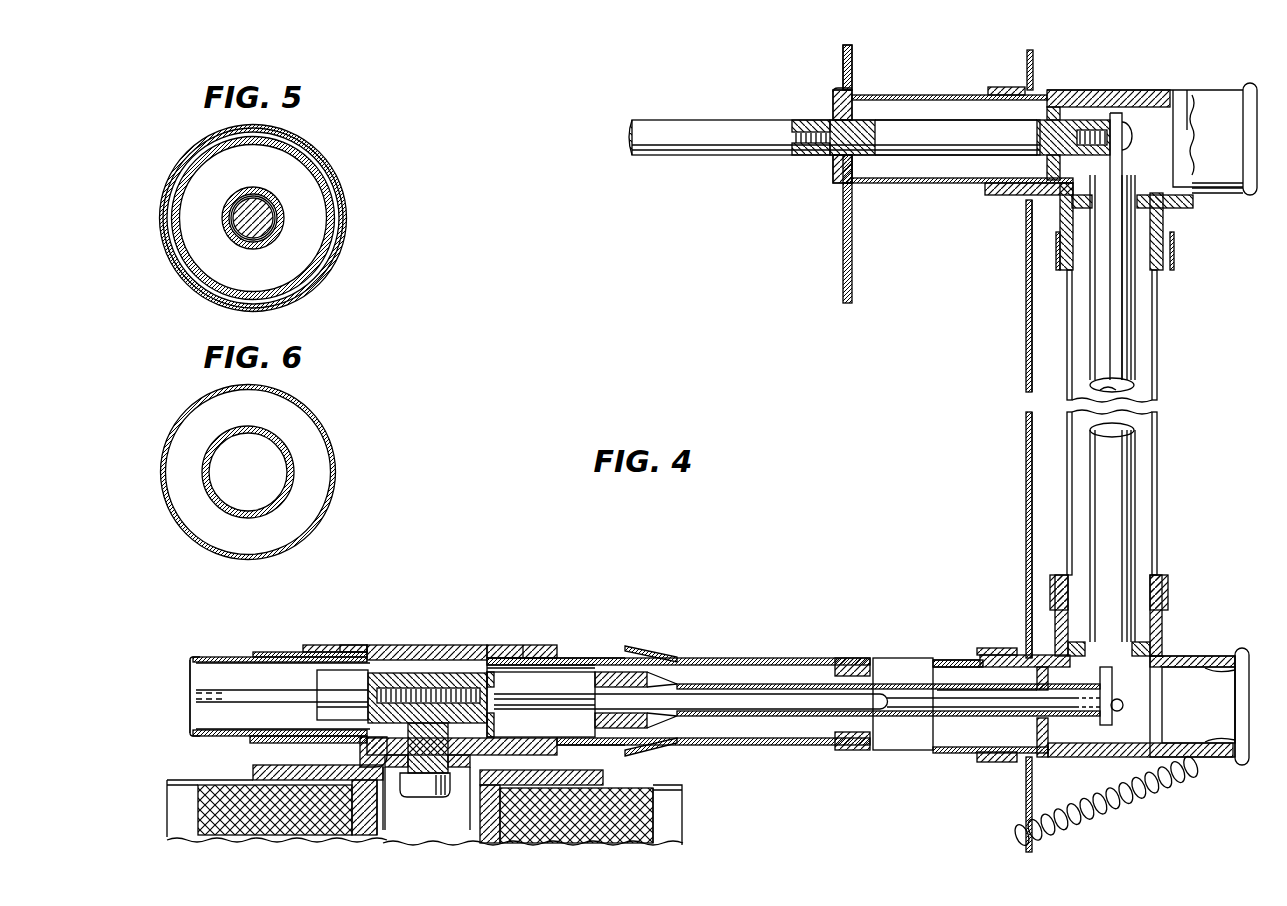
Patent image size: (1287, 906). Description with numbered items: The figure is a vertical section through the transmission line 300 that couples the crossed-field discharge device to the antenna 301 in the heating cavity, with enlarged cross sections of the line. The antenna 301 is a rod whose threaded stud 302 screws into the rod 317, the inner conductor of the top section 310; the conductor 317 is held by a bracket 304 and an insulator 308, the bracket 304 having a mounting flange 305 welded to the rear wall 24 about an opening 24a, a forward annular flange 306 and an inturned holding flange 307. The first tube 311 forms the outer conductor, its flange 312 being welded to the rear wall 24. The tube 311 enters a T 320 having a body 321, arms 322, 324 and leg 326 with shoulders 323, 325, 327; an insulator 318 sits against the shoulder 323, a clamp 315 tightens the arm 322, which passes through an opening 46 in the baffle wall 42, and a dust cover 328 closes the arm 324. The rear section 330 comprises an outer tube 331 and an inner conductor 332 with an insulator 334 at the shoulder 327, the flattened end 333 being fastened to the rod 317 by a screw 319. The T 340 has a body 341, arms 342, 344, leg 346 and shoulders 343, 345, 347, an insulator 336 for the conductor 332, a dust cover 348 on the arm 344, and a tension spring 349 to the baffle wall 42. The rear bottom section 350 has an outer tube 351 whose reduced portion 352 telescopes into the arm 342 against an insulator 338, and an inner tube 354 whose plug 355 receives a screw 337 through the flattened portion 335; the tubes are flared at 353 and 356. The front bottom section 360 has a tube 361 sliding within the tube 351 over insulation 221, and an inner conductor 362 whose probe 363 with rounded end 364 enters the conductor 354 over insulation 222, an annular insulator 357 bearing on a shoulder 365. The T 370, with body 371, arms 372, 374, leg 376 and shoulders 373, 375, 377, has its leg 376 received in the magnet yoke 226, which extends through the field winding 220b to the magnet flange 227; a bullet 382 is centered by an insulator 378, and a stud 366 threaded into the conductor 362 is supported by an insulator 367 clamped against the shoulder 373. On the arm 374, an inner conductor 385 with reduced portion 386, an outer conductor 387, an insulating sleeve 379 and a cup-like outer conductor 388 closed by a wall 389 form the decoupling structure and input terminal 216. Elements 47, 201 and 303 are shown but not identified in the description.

In FIG. 4, the rear wall 24 is at (843, 52).
In FIG. 4, the opening 24a is at (838, 178).
In FIG. 4, the baffle wall 42 is at (1034, 64).
In FIG. 4, the opening 46 is at (1025, 204).
In FIG. 4, the panel wall 47 is at (1024, 630).
In FIG. 4, the ground plane 201 is at (186, 780).
In FIG. 4, the input terminal 216 is at (198, 692).
In FIG. 4, the field winding 220b is at (192, 808).
In FIG. 5, the layer of insulation 221 is at (348, 213).
In FIG. 4, the layer of insulation 221 is at (576, 660).
In FIG. 5, the layer of insulation 222 is at (228, 220).
In FIG. 4, the layer of insulation 222 is at (776, 720).
In FIG. 4, the magnet yoke 226 is at (287, 807).
In FIG. 4, the magnet flange 227 is at (256, 772).
In FIG. 4, the transmission line 300 is at (935, 598).
In FIG. 4, the antenna 301 is at (672, 152).
In FIG. 4, the threaded stud 302 is at (795, 138).
In FIG. 4, the collar 303 is at (852, 137).
In FIG. 4, the bracket 304 is at (832, 177).
In FIG. 4, the annular mounting flange 305 is at (840, 212).
In FIG. 4, the forwardly directed annular flange 306 is at (838, 91).
In FIG. 4, the inturned holding flange 307 is at (835, 100).
In FIG. 4, the electrical insulator 308 is at (855, 112).
In FIG. 4, the top section 310 is at (945, 186).
In FIG. 4, the first tube 311 is at (950, 95).
In FIG. 4, the outwardly directed flange 312 is at (854, 72).
In FIG. 4, the clamp 315 is at (1000, 88).
In FIG. 4, the inner conductor 317 is at (950, 153).
In FIG. 4, the insulator 318 is at (1048, 112).
In FIG. 4, the screw 319 is at (1124, 134).
In FIG. 4, the T 320 is at (1140, 89).
In FIG. 4, the body 321 is at (1097, 92).
In FIG. 4, the arm 322 is at (986, 190).
In FIG. 4, the shoulder 323 is at (1060, 176).
In FIG. 4, the arm 324 is at (1180, 90).
In FIG. 4, the shoulder 325 is at (1188, 108).
In FIG. 4, the leg 326 is at (1164, 222).
In FIG. 4, the shoulder 327 is at (1165, 205).
In FIG. 4, the dust cover 328 is at (1247, 190).
In FIG. 4, the rear section 330 is at (1163, 352).
In FIG. 6, the outer tube 331 is at (333, 465).
In FIG. 4, the outer tube 331 is at (1160, 400).
In FIG. 6, the inner conductor 332 is at (280, 438).
In FIG. 4, the inner conductor 332 is at (1100, 290).
In FIG. 4, the upper flattened end 333 is at (1118, 168).
In FIG. 4, the insulator 334 is at (1062, 215).
In FIG. 4, the flattened portion 335 is at (1113, 680).
In FIG. 4, the insulator 336 is at (1072, 650).
In FIG. 4, the screw 337 is at (1120, 716).
In FIG. 4, the insulator 338 is at (1042, 758).
In FIG. 4, the T 340 is at (1196, 654).
In FIG. 4, the body 341 is at (1130, 758).
In FIG. 4, the arm 342 is at (975, 654).
In FIG. 4, the shoulder 343 is at (1038, 672).
In FIG. 4, the arm 344 is at (1227, 760).
In FIG. 4, the shoulder 345 is at (1198, 705).
In FIG. 4, the leg 346 is at (1162, 640).
In FIG. 4, the seat 347 is at (1163, 658).
In FIG. 4, the dust cover 348 is at (1238, 755).
In FIG. 4, the spring 349 is at (1143, 795).
In FIG. 4, the rear bottom section 350 is at (890, 656).
In FIG. 5, the tube 351 is at (338, 192).
In FIG. 4, the tube 351 is at (900, 658).
In FIG. 4, the portion of reduced diameter 352 is at (960, 661).
In FIG. 4, the flared end 353 is at (640, 655).
In FIG. 5, the tube 354 is at (237, 233).
In FIG. 4, the tube 354 is at (960, 753).
In FIG. 4, the plug 355 is at (1060, 710).
In FIG. 4, the flared end 356 is at (660, 676).
In FIG. 4, the annular insulator 357 is at (617, 655).
In FIG. 4, the front bottom section 360 is at (573, 655).
In FIG. 5, the tube 361 is at (333, 238).
In FIG. 4, the tube 361 is at (527, 643).
In FIG. 4, the inner conductor 362 is at (565, 778).
In FIG. 5, the probe 363 is at (225, 200).
In FIG. 4, the probe 363 is at (803, 697).
In FIG. 4, the rounded end 364 is at (882, 704).
In FIG. 4, the shoulder 365 is at (597, 679).
In FIG. 4, the stud 366 is at (440, 688).
In FIG. 4, the supporting insulator 367 is at (495, 668).
In FIG. 4, the T 370 is at (425, 650).
In FIG. 4, the body 371 is at (395, 648).
In FIG. 4, the arm 372 is at (540, 647).
In FIG. 4, the shoulder 373 is at (541, 701).
In FIG. 4, the arm 374 is at (315, 646).
In FIG. 4, the shoulder 375 is at (355, 646).
In FIG. 4, the leg 376 is at (576, 815).
In FIG. 4, the shoulder 377 is at (427, 798).
In FIG. 4, the insulator 378 is at (470, 760).
In FIG. 4, the insulating sleeve 379 is at (212, 657).
In FIG. 4, the bullet 382 is at (437, 798).
In FIG. 4, the inner conductor 385 is at (320, 680).
In FIG. 4, the reduced forward portion 386 is at (248, 692).
In FIG. 4, the outer conductor 387 is at (258, 652).
In FIG. 4, the cup-like outer conductor 388 is at (268, 730).
In FIG. 4, the wall 389 is at (190, 722).